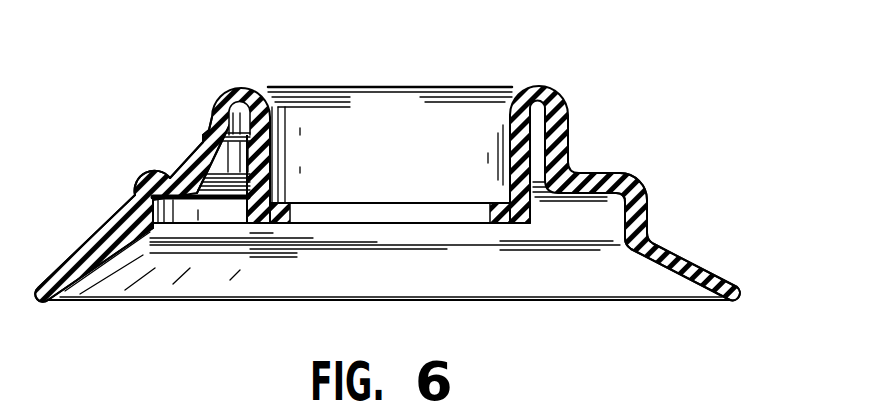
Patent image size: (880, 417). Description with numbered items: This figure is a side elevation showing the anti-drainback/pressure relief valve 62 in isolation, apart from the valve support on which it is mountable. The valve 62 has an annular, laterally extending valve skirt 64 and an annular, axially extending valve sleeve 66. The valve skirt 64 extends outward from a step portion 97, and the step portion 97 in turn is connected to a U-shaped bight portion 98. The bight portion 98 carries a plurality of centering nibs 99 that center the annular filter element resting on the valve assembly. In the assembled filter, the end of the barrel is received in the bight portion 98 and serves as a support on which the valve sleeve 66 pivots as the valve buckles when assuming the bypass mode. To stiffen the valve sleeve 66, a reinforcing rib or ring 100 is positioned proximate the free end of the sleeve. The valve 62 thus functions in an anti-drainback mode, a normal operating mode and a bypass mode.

The anti-drainback/pressure relief valve 62 is at (530, 72).
The valve skirt portion 64 is at (724, 277).
The valve sleeve 66 is at (268, 182).
The step portion 97 is at (628, 184).
The U-shaped bight portion 98 is at (249, 96).
The centering nibs 99 is at (205, 140).
The reinforcing rib or ring 100 is at (503, 203).